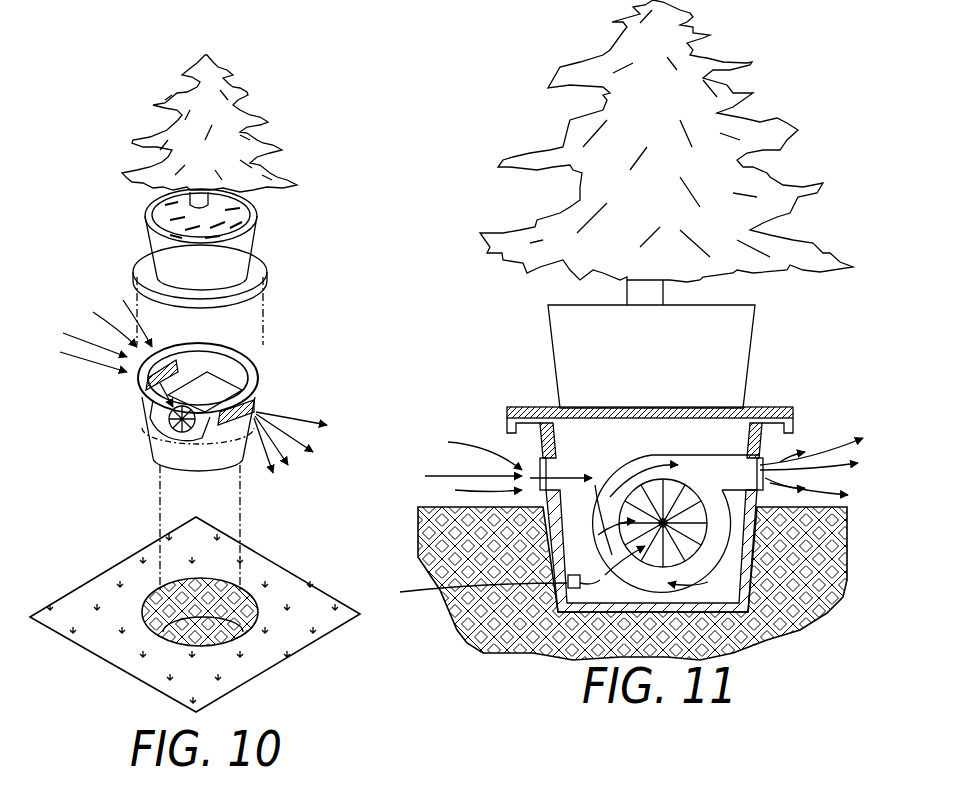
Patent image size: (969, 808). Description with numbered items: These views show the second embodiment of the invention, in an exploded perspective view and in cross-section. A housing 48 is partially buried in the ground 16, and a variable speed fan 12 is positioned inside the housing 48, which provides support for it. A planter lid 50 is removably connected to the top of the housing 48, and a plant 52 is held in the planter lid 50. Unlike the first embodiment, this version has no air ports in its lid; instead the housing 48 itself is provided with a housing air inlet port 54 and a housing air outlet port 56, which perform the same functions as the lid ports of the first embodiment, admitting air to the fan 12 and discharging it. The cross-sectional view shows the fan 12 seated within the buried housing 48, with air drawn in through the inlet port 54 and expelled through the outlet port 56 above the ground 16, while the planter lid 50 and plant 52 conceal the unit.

In FIG. 10, the variable speed fan 12 is at (222, 382).
In FIG. 11, the variable speed fan 12 is at (745, 580).
In FIG. 10, the ground 16 is at (263, 553).
In FIG. 11, the ground 16 is at (830, 592).
In FIG. 10, the housing 48 is at (260, 379).
In FIG. 11, the housing 48 is at (760, 453).
In FIG. 10, the planter lid 50 is at (264, 268).
In FIG. 11, the planter lid 50 is at (750, 358).
In FIG. 10, the plant 52 is at (248, 112).
In FIG. 11, the plant 52 is at (760, 120).
In FIG. 10, the housing air inlet port 54 is at (146, 384).
In FIG. 11, the housing air inlet port 54 is at (540, 457).
In FIG. 10, the housing air outlet port 56 is at (218, 455).
In FIG. 11, the housing air outlet port 56 is at (835, 475).